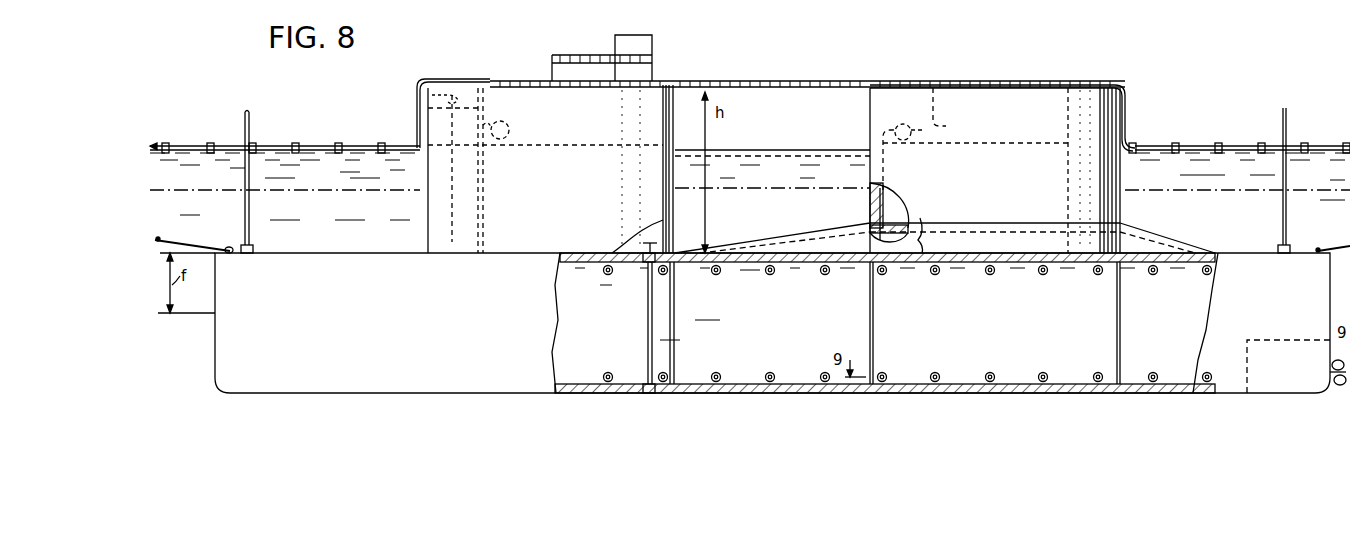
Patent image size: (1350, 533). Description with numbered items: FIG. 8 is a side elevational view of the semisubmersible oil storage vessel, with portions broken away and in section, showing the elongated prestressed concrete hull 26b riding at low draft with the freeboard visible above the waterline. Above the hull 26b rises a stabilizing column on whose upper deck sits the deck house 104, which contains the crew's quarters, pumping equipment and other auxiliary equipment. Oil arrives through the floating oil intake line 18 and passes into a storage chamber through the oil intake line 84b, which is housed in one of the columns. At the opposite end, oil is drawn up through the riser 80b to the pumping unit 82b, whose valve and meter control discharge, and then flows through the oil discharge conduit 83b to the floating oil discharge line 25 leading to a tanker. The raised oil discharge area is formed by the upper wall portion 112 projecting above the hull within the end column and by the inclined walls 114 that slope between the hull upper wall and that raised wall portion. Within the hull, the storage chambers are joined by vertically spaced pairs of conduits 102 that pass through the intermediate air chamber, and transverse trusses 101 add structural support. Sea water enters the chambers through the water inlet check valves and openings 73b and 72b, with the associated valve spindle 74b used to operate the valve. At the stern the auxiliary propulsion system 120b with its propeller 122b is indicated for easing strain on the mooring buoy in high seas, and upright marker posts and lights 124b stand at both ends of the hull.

The floating oil intake line 18 is at (321, 143).
The floating oil discharge line 25 is at (1186, 143).
The hull 26b is at (422, 300).
The water inlet check valve and opening 72b is at (643, 385).
The water inlet check valve and opening 73b is at (647, 384).
The valve spindle 74b is at (648, 312).
The riser 80b is at (890, 203).
The pumping unit 82b is at (878, 120).
The oil discharge conduit 83b is at (938, 112).
The oil intake line 84b is at (486, 98).
The truss 101 is at (874, 292).
The conduit 102 is at (990, 276).
The deck house 104 is at (563, 70).
The upper wall portion 112 is at (898, 226).
The inclined wall 114 is at (790, 238).
The auxiliary propulsion system 120b is at (1303, 338).
The propeller 122b is at (1333, 371).
The marker post and light 124b is at (244, 133).